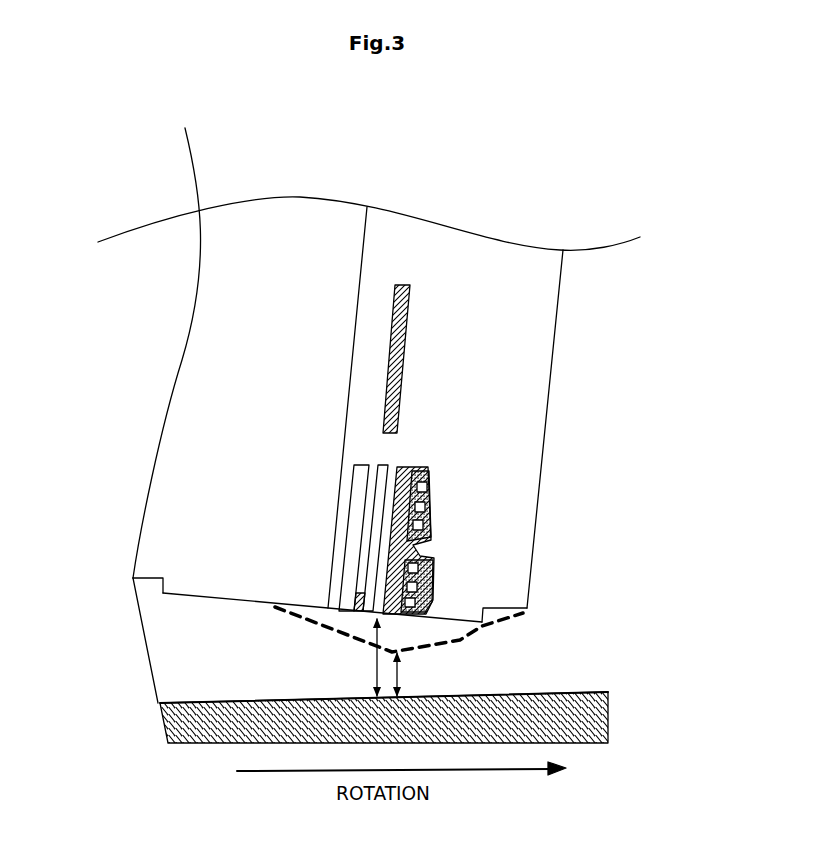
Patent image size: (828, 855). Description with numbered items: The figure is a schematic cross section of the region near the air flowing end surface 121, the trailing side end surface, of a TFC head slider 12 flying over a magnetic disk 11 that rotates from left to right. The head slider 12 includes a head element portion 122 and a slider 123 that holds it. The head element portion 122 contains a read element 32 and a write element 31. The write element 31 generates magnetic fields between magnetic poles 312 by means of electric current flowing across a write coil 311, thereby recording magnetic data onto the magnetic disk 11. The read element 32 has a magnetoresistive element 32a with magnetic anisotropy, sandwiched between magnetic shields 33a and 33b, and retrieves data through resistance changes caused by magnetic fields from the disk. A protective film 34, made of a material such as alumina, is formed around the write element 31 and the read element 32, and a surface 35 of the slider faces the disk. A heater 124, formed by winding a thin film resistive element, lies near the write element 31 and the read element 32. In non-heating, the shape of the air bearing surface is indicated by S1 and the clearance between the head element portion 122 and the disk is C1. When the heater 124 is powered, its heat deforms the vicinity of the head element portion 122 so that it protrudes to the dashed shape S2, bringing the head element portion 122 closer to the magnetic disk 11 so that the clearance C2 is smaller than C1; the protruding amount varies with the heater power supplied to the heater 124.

The head slider 12 is at (428, 199).
The air flowing end surface 121 is at (560, 322).
The head element portion 122 is at (593, 434).
The slider 123 is at (138, 590).
The heater 124 is at (402, 370).
The protective film 34 is at (362, 290).
The magnetic shield 33a is at (388, 466).
The magnetic shield 33b is at (350, 480).
The read element 32 is at (347, 618).
The magnetoresistive element 32a is at (358, 616).
The write element 31 is at (527, 540).
The write coil 311 is at (432, 476).
The magnetic poles 312 is at (432, 580).
The rotor bottom surface 35 is at (200, 602).
The magnetic disk 11 is at (548, 697).
The ABS shape in non-heating S1 is at (305, 616).
The protruding shape in heating S2 is at (458, 641).
The clearance in non-heating C1 is at (361, 657).
The clearance in heating C2 is at (418, 674).